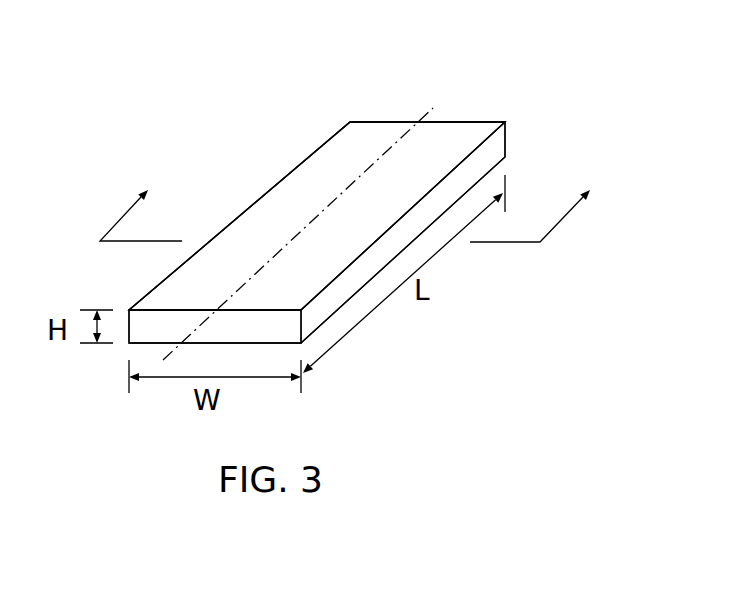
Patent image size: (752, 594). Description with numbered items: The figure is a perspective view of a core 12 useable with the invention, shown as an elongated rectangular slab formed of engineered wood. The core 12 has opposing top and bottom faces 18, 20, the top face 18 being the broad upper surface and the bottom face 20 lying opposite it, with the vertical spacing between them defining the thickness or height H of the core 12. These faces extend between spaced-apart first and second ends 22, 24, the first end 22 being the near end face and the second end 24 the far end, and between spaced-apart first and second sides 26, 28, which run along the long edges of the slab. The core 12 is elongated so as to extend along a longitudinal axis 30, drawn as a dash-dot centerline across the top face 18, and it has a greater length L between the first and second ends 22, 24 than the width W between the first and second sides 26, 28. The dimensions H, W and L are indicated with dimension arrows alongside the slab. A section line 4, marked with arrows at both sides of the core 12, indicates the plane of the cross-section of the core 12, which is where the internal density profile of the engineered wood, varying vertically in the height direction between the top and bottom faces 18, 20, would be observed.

The core 12 is at (121, 70).
The top face 18 is at (357, 135).
The bottom face 20 is at (505, 158).
The first end 22 is at (140, 330).
The second end 24 is at (462, 122).
The first side 26 is at (293, 170).
The second side 28 is at (497, 142).
The longitudinal axis 30 is at (433, 107).
The section line 4 is at (357, 199).